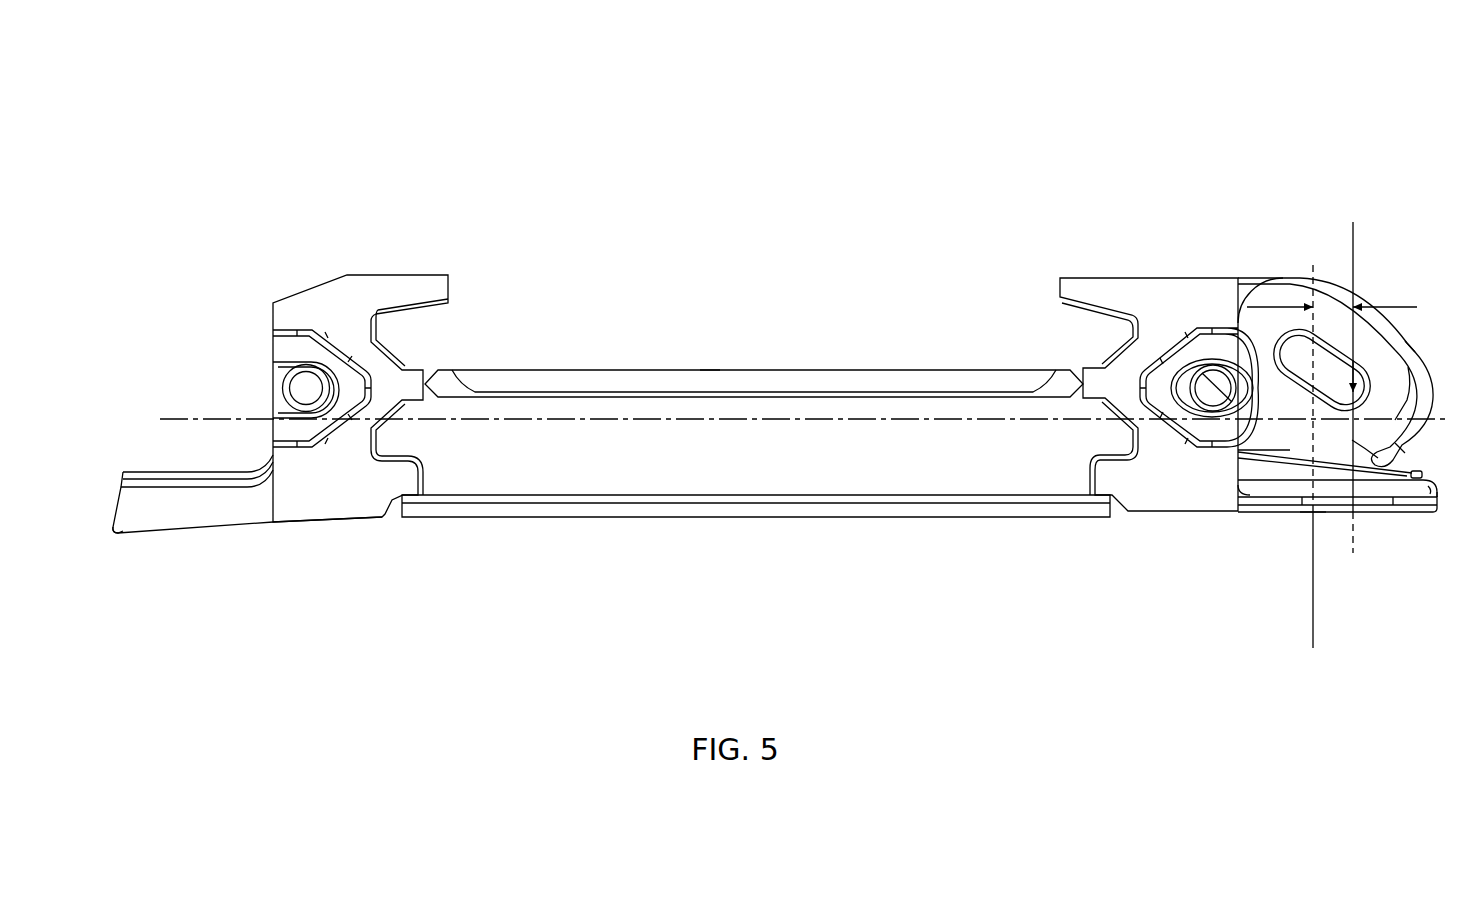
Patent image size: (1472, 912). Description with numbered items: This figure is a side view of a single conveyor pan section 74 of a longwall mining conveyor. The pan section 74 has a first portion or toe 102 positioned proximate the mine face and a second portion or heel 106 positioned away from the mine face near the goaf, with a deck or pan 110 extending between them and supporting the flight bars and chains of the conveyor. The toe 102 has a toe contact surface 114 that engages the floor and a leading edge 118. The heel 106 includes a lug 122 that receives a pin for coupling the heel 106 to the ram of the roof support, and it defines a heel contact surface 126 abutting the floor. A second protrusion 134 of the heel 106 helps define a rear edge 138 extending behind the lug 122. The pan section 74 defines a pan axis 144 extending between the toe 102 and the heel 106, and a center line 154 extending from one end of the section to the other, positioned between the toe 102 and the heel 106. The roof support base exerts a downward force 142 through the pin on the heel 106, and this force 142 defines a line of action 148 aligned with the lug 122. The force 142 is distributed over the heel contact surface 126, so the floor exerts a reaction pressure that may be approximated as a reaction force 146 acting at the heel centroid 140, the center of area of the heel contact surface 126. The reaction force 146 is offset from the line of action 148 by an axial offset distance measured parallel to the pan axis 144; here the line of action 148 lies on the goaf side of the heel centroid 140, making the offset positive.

The pan section 74 is at (1077, 92).
The toe 102 is at (222, 295).
The heel 106 is at (1268, 210).
The pan 110 is at (767, 278).
The toe contact surface 114 is at (172, 535).
The leading edge 118 is at (98, 527).
The lug 122 is at (1408, 348).
The heel contact surface 126 is at (1377, 514).
The second protrusion 134 is at (1408, 498).
The rear edge 138 is at (1446, 490).
The heel centroid 140 is at (1313, 513).
The downward force 142 is at (1358, 257).
The pan axis 144 is at (720, 420).
The reaction force 146 is at (1313, 576).
The line of action 148 is at (1398, 456).
The center line 154 is at (750, 325).